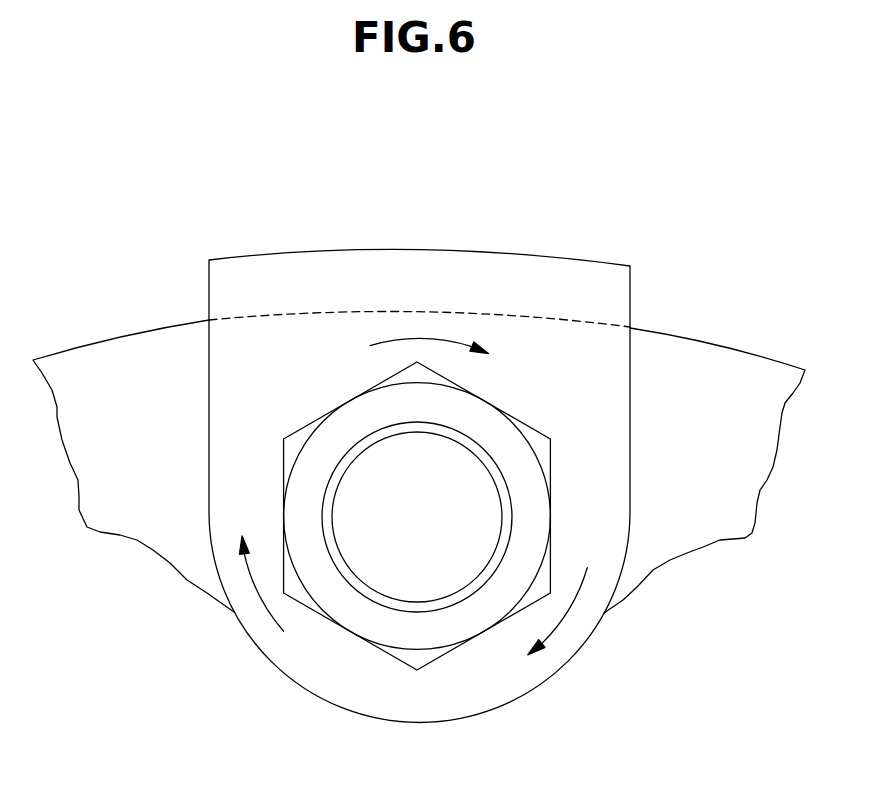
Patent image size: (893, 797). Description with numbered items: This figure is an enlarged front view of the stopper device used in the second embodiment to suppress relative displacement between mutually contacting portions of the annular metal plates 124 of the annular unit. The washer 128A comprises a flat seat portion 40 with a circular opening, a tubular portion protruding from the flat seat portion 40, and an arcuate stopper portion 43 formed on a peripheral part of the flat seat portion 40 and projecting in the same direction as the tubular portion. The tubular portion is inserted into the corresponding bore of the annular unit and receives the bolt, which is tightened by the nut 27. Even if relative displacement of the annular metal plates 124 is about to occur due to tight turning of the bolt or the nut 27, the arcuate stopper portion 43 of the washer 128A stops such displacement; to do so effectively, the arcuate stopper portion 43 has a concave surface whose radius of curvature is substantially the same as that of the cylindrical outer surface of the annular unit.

The arcuate stopper portion 43 is at (522, 253).
The flat seat portion 40 is at (318, 660).
The washer 128A is at (297, 276).
The annular metal plates 124 is at (698, 375).
The nut 27 is at (462, 622).